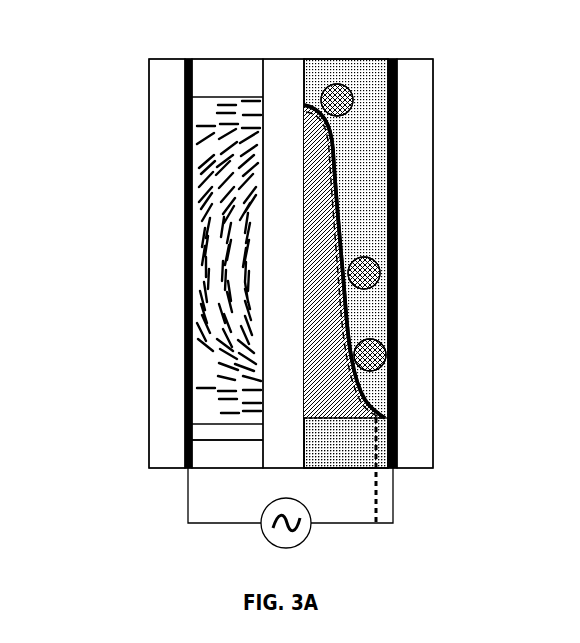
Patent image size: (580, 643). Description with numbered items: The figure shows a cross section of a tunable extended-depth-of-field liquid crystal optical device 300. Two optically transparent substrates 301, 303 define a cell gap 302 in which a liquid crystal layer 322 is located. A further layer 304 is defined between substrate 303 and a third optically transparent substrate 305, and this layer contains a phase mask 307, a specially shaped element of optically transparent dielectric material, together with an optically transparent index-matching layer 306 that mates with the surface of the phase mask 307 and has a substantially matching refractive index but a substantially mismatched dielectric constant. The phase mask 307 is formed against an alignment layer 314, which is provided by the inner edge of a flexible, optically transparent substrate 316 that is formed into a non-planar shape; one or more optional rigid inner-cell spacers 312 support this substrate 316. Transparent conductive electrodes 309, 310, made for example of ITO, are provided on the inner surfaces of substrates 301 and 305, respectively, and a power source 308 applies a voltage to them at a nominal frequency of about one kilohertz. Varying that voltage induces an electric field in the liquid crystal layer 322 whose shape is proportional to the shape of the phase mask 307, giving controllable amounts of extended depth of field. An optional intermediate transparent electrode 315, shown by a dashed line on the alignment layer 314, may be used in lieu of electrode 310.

The optical device 300 is at (78, 249).
The optically transparent substrate 301 is at (165, 60).
The cell gap 302 is at (218, 60).
The optically transparent substrate 303 is at (290, 60).
The layer 304 is at (342, 60).
The optically transparent substrate 305 is at (410, 60).
The index-matching layer 306 is at (372, 183).
The phase mask 307 is at (325, 319).
The power source 308 is at (262, 541).
The electrode 309 is at (186, 438).
The electrode 310 is at (397, 433).
The inner-cell spacer 312 is at (353, 104).
The alignment layer 314 is at (343, 230).
The intermediate electrode 315 is at (372, 392).
The substrate 316 is at (344, 261).
The liquid crystal layer 322 is at (237, 103).